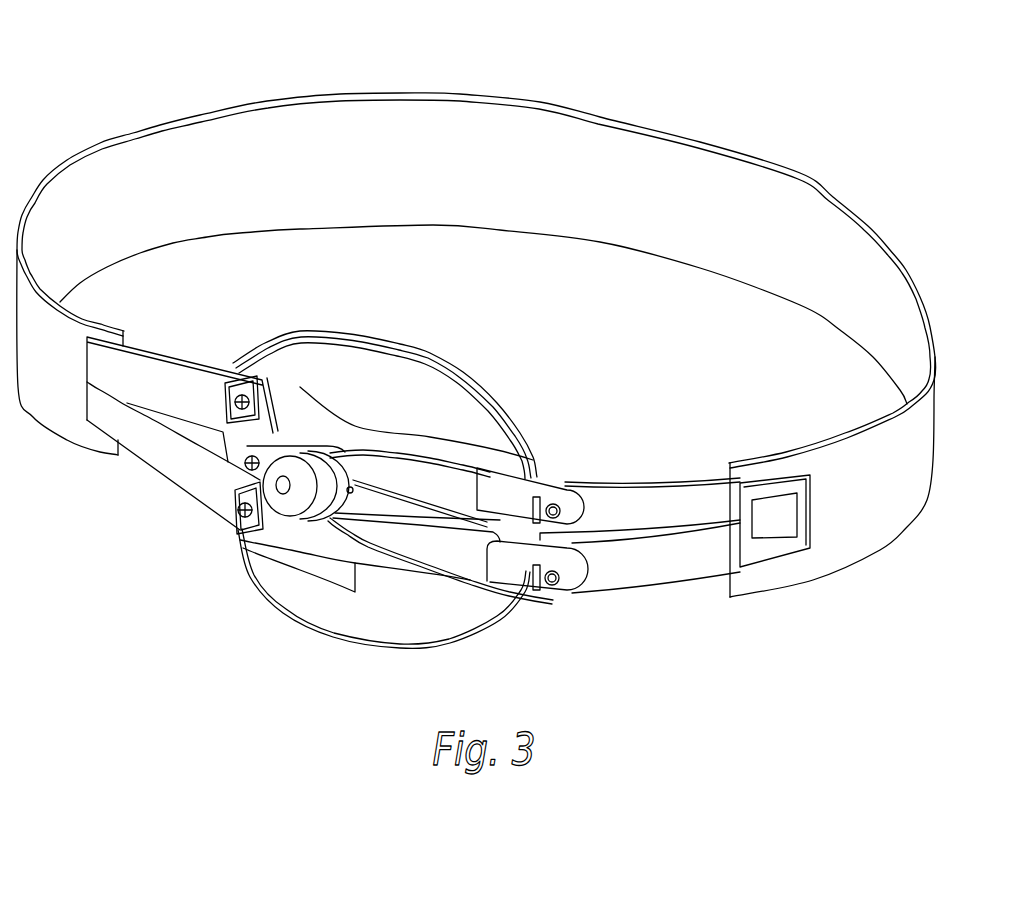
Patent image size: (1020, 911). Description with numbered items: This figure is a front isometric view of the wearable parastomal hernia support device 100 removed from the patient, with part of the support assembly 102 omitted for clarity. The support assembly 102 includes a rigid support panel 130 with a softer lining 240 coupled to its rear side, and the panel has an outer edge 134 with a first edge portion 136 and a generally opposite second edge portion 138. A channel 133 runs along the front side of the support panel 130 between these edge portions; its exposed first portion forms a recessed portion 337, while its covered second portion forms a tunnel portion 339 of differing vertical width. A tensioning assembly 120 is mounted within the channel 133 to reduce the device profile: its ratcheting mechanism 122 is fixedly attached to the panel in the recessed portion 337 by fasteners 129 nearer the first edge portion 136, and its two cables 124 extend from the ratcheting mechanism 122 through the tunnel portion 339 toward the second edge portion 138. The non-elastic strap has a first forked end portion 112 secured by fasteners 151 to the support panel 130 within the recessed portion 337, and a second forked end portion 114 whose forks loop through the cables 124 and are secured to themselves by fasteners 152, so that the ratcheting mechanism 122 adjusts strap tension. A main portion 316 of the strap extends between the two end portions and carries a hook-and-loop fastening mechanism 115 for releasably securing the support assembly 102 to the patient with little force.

The wearable parastomal hernia support device 100 is at (205, 80).
The main portion 316 is at (598, 135).
The first edge portion 136 is at (208, 442).
The first forked end portion 112 is at (162, 465).
The fasteners 151 is at (240, 390).
The support assembly 102 is at (283, 613).
The tensioning assembly 120 is at (328, 528).
The ratcheting mechanism 122 is at (290, 472).
The fasteners 129 is at (253, 455).
The channel 133 is at (350, 418).
The outer edge 134 is at (405, 355).
The lining 240 is at (505, 413).
The cables 124 is at (412, 450).
The fasteners 152 is at (558, 502).
The support panel 130 is at (443, 630).
The tunnel portion 339 is at (422, 548).
The recessed portion 337 is at (336, 575).
The second edge portion 138 is at (527, 608).
The second forked end portion 114 is at (658, 572).
The hook-and-loop fastening mechanism 115 is at (778, 523).